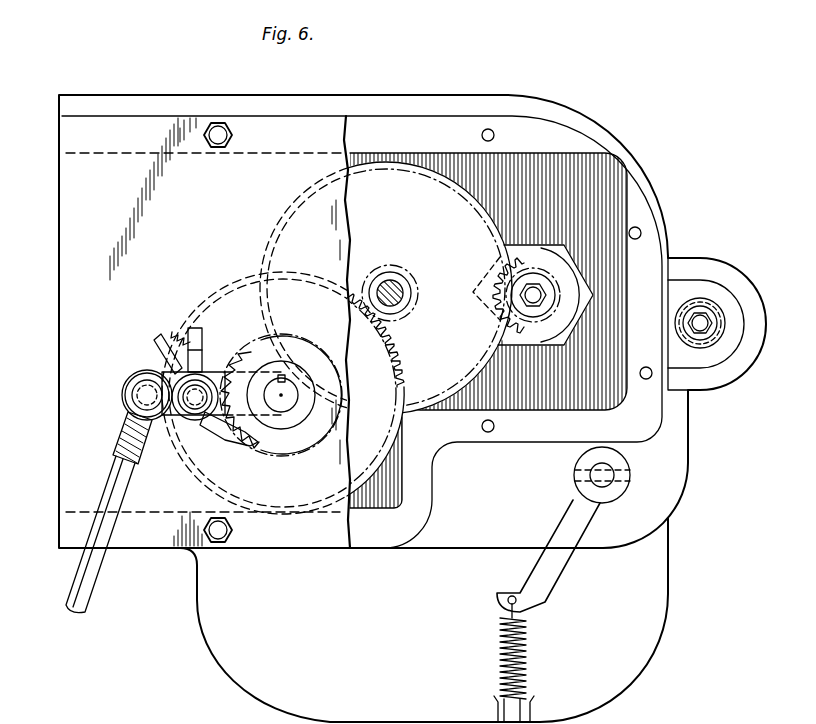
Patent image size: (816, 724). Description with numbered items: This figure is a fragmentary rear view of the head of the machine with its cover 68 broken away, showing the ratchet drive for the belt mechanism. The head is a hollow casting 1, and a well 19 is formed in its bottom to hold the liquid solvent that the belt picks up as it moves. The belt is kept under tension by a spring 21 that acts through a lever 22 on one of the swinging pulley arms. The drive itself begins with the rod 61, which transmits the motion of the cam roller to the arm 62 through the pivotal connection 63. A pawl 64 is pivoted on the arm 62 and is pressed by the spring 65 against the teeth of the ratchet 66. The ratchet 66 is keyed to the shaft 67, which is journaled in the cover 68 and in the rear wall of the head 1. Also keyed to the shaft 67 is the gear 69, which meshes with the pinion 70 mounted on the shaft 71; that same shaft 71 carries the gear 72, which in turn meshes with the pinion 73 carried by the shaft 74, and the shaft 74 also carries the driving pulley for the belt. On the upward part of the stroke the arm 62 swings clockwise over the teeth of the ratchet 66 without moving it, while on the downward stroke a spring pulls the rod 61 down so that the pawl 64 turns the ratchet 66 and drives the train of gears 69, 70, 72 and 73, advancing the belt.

The hollow casting 1 is at (611, 142).
The well 19 is at (202, 607).
The spring 21 is at (499, 638).
The lever 22 is at (573, 501).
The rod 61 is at (74, 590).
The arm 62 is at (170, 420).
The pivotal connection 63 is at (145, 375).
The pawl 64 is at (160, 345).
The spring 65 is at (182, 330).
The ratchet 66 is at (255, 446).
The shaft 67 is at (286, 402).
The cover 68 is at (66, 359).
The gear 69 is at (226, 288).
The pinion 70 is at (412, 292).
The shaft 71 is at (396, 282).
The gear 72 is at (410, 185).
The pinion 73 is at (503, 253).
The shaft 74 is at (524, 297).